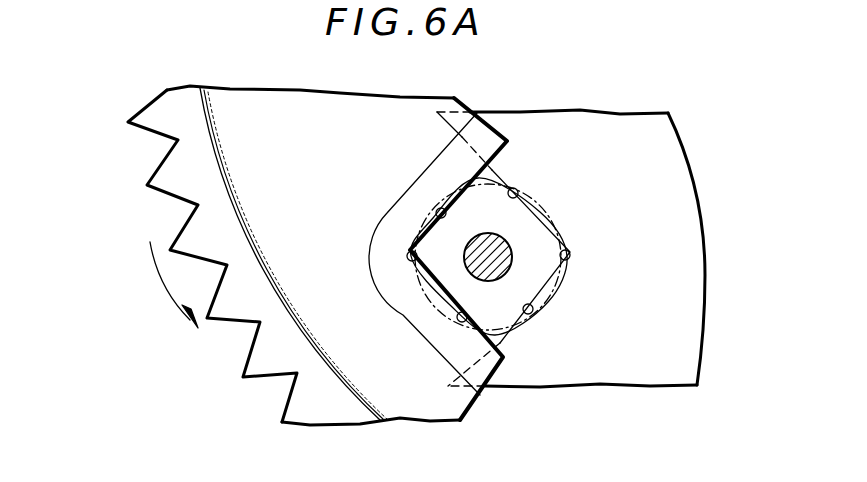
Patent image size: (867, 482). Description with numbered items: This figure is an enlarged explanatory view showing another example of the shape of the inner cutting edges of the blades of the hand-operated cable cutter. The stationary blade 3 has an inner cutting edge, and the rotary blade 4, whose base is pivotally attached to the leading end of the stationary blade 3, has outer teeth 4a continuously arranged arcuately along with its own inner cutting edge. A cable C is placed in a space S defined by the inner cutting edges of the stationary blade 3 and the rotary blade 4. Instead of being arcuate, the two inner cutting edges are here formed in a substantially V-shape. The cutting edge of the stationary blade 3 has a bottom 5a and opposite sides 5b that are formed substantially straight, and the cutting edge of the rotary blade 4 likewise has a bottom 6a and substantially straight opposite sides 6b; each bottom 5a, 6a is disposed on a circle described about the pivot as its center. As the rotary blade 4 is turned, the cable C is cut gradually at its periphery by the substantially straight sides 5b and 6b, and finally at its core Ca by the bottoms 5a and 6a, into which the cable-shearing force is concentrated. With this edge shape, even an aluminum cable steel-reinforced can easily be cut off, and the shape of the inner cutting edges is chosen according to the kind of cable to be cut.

The stationary blade 3 is at (678, 190).
The rotary blade 4 is at (292, 108).
The outer teeth 4a is at (178, 236).
The bottom of inner cutting edge of stationary blade 5a is at (569, 250).
The sides of inner cutting edge of stationary blade 5b is at (516, 191).
The bottom of inner cutting edge of rotary blade 6a is at (403, 243).
The sides of inner cutting edge of rotary blade 6b is at (438, 211).
The core of cable Ca is at (497, 250).
The cable C is at (527, 323).
The space S is at (486, 177).